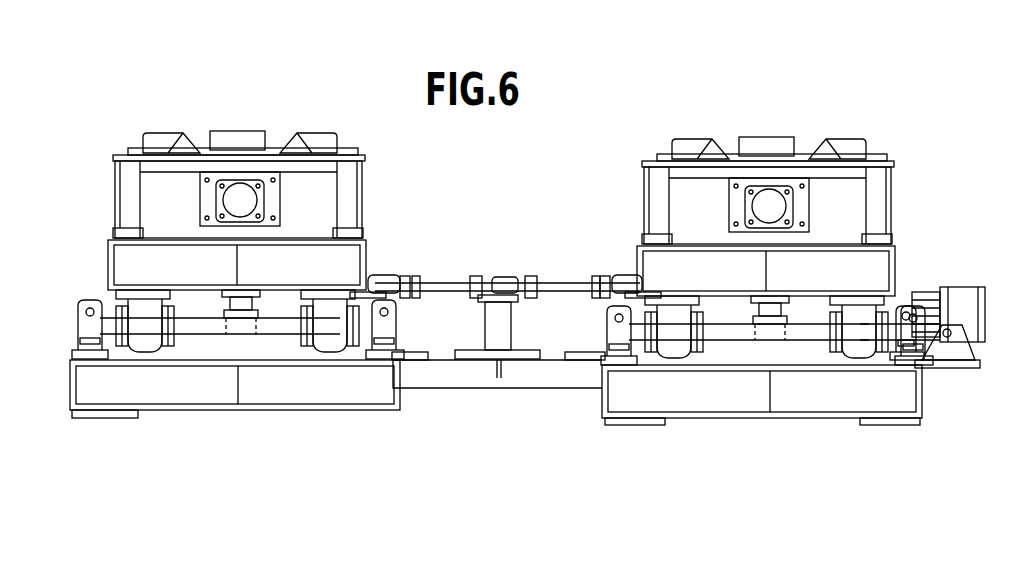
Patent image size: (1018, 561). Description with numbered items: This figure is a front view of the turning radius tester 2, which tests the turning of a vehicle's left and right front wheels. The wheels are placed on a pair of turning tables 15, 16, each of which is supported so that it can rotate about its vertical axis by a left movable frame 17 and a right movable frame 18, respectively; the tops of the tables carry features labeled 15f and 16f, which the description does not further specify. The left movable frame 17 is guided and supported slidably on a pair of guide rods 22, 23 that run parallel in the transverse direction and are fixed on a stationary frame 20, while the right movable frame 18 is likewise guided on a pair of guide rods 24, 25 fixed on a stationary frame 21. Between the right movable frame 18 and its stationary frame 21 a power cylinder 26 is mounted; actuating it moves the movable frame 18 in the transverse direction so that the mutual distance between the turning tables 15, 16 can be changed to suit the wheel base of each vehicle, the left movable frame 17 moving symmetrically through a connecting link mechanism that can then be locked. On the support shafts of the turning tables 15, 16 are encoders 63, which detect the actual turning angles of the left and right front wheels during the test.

The turning radius tester 2 is at (947, 126).
The turning table 15 is at (252, 148).
The flange of first housing 15f is at (222, 130).
The turning table 16 is at (805, 155).
The flange of second housing 16f is at (763, 137).
The movable frame 17 is at (362, 195).
The movable frame 18 is at (886, 195).
The stationary frame 20 is at (228, 410).
The stationary frame 21 is at (783, 420).
The guide rod 22 is at (238, 392).
The guide rod 23 is at (190, 332).
The guide rod 24 is at (767, 400).
The guide rod 25 is at (800, 336).
The power cylinder 26 is at (970, 287).
The encoder 63 is at (250, 332).